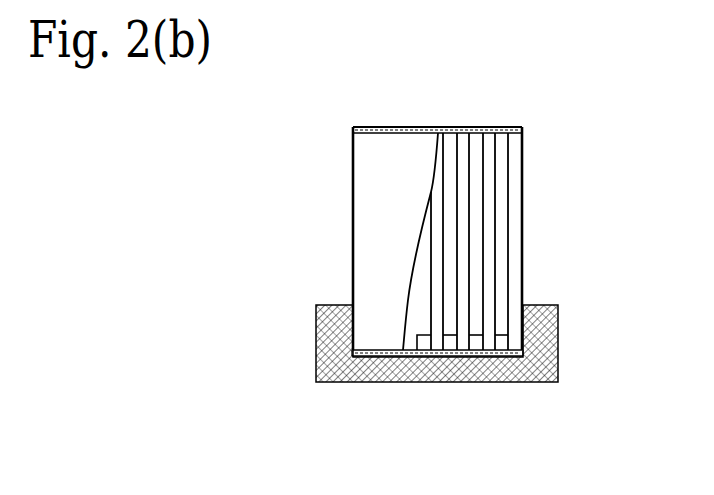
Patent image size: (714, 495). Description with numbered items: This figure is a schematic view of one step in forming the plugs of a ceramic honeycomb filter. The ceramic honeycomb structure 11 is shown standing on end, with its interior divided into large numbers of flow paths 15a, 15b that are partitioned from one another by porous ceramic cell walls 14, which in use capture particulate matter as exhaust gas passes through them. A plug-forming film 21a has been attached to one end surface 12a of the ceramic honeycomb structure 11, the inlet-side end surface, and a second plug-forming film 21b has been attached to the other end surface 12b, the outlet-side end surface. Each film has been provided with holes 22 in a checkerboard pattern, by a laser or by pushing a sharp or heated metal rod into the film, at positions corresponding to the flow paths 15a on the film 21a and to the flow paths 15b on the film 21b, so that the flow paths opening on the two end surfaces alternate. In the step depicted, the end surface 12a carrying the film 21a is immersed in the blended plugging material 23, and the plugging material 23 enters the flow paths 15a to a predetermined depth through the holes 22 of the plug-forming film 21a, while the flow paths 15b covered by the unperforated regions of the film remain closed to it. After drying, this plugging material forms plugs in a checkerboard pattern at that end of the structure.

The ceramic honeycomb structure 11 is at (352, 194).
The one end surface 12a is at (523, 354).
The another end surface 12b is at (522, 127).
The cell walls 14 is at (495, 190).
The flow paths 15a is at (500, 268).
The flow paths 15b is at (487, 230).
The plug-forming film 21a is at (351, 353).
The plug-forming film 21b is at (354, 127).
The holes 22 is at (425, 352).
The plugging material 23 is at (476, 356).